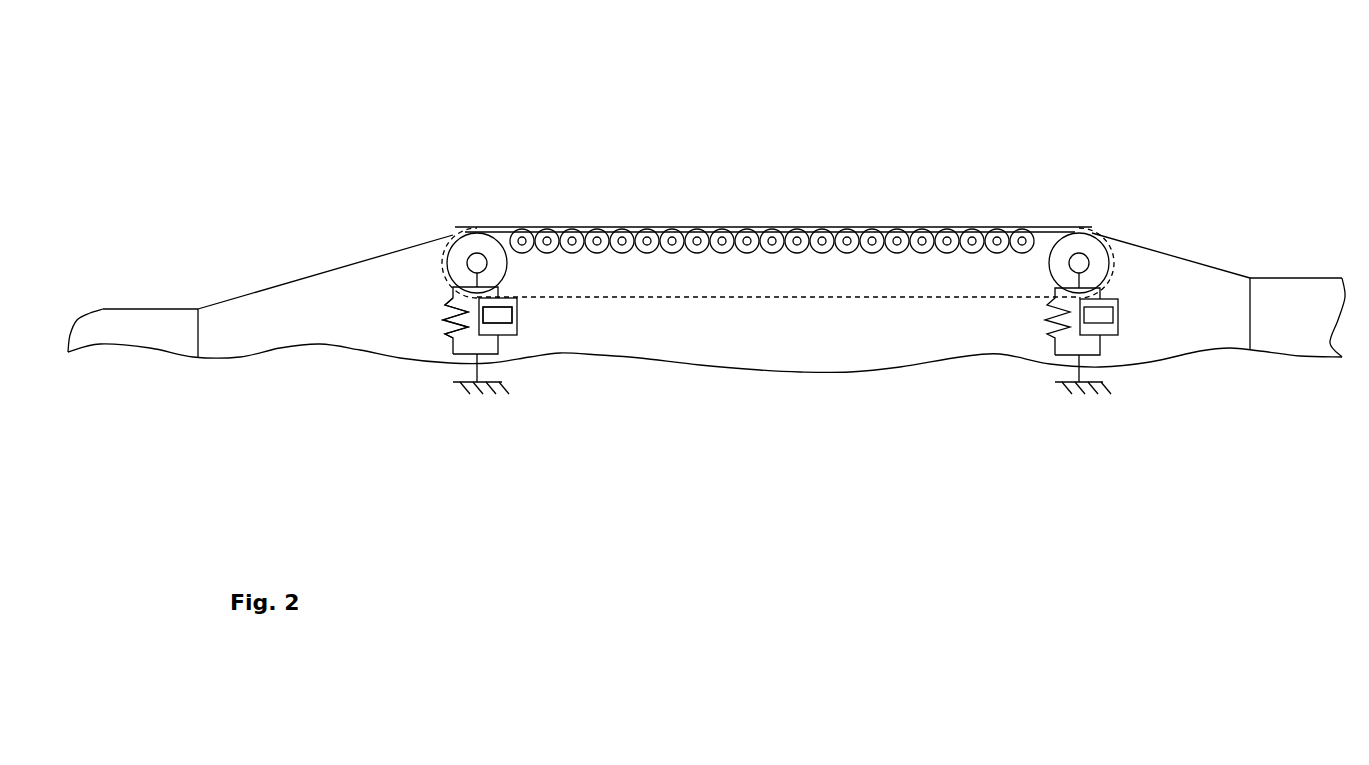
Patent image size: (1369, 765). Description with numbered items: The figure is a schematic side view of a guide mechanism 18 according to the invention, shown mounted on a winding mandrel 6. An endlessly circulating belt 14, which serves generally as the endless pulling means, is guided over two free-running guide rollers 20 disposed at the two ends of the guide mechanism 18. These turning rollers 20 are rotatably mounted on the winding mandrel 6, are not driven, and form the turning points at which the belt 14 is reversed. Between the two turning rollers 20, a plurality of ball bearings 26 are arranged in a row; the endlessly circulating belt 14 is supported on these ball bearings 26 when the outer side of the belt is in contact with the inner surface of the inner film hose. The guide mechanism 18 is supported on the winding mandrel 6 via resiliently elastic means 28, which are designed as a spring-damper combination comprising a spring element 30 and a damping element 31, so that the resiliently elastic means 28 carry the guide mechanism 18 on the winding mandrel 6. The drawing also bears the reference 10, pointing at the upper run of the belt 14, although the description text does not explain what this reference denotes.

The winding mandrel 6 is at (232, 292).
The belt 10 is at (557, 213).
The endlessly circulating belt 14 is at (793, 230).
The guide mechanism 18 is at (610, 180).
The guide rollers 20 is at (1085, 245).
The ball bearings 26 is at (935, 228).
The resiliently elastic means 28 is at (502, 364).
The spring element 30 is at (440, 330).
The damping element 31 is at (505, 318).